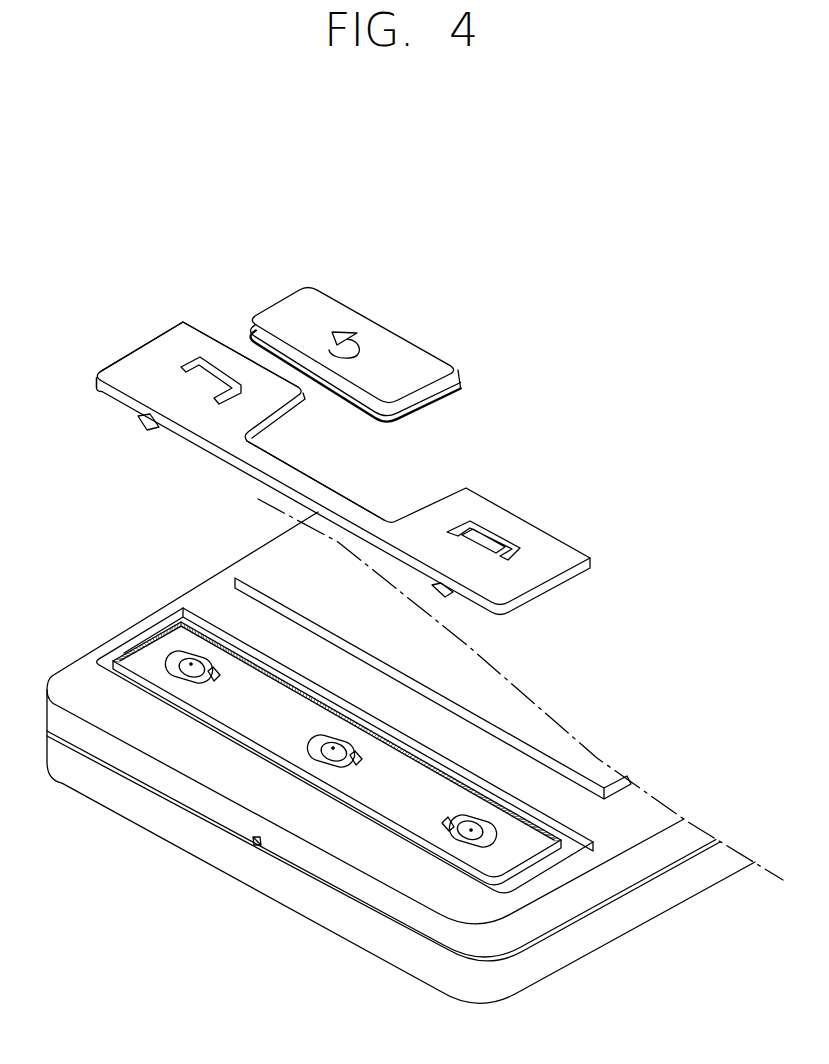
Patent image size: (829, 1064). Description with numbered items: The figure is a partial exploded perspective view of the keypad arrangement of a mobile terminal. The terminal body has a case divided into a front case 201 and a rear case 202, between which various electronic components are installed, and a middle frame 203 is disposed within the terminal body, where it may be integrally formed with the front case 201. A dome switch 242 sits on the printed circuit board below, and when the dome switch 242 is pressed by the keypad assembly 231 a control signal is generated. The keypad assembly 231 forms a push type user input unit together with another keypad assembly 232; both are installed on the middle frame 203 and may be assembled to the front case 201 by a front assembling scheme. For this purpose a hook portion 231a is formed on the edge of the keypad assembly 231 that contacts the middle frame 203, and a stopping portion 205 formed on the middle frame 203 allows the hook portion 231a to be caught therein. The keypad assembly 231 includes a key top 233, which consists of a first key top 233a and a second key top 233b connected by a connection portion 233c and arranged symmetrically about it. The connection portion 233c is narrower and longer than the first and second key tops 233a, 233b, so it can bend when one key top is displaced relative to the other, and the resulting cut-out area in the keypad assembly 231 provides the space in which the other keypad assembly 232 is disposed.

The front case 201 is at (549, 918).
The rear case 202 is at (528, 972).
The middle frame 203 is at (561, 855).
The stopping portion 205 is at (442, 866).
The keypad assembly 231 is at (150, 336).
The hook portion 231a is at (147, 423).
The keypad assembly 232 is at (331, 289).
The key top 233 is at (548, 262).
The first key top 233a is at (272, 387).
The second key top 233b is at (483, 515).
The connection portion 233c is at (325, 500).
The dome switch 242 is at (190, 666).